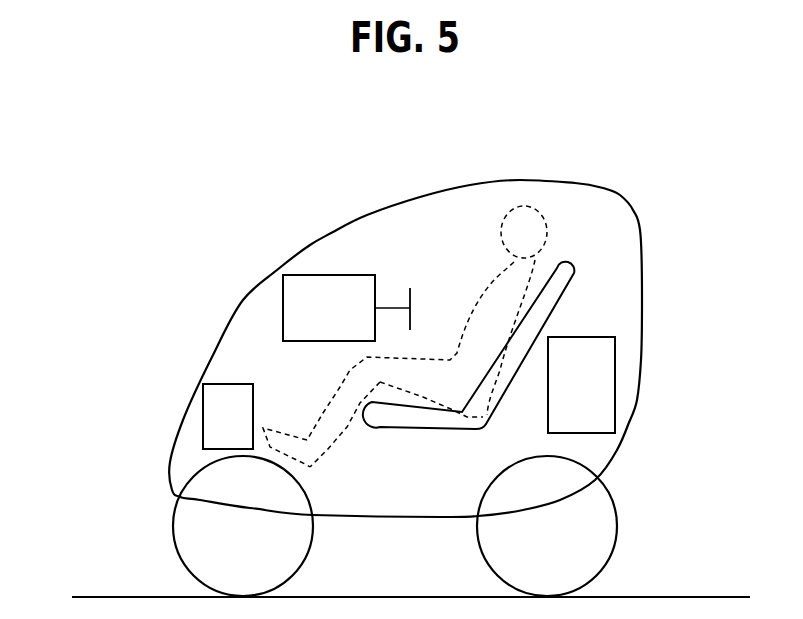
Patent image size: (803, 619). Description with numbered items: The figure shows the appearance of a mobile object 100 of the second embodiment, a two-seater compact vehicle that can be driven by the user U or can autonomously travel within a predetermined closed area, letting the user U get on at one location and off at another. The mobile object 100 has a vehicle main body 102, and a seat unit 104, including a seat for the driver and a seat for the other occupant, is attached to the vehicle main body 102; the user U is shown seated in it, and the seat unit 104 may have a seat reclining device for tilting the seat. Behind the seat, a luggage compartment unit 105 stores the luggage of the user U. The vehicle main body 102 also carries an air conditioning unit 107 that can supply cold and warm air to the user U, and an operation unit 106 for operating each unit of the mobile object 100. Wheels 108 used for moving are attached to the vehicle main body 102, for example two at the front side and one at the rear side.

The mobile object 100 is at (519, 148).
The vehicle main body 102 is at (333, 232).
The seat unit 104 is at (540, 325).
The luggage compartment unit 105 is at (615, 392).
The operation unit 106 is at (283, 305).
The air conditioning unit 107 is at (203, 420).
The wheels 108 is at (172, 527).
The user U is at (585, 217).